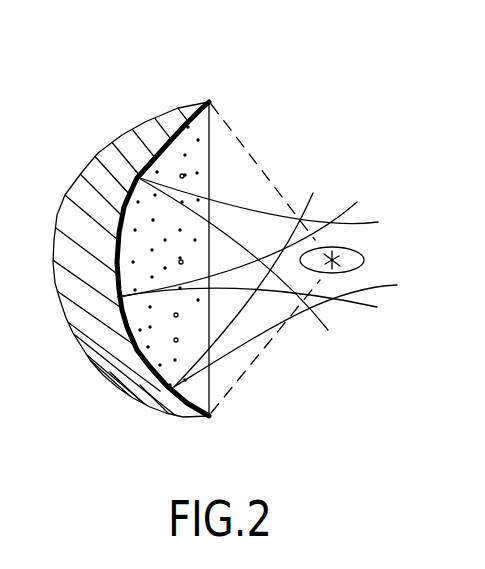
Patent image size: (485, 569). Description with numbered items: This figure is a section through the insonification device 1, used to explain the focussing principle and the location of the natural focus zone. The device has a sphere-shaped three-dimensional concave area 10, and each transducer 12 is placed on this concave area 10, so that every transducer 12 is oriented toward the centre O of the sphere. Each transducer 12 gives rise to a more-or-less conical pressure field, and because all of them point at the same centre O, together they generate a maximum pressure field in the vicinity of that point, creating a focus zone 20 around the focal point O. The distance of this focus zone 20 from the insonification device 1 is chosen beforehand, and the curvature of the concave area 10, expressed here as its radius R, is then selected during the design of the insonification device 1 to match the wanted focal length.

The insonification device 1 is at (131, 104).
The three-dimensional concave area 10 is at (197, 171).
The transducer 12 is at (136, 177).
The focus zone 20 is at (365, 260).
The centre of the sphere O is at (336, 250).
The radius R is at (250, 360).